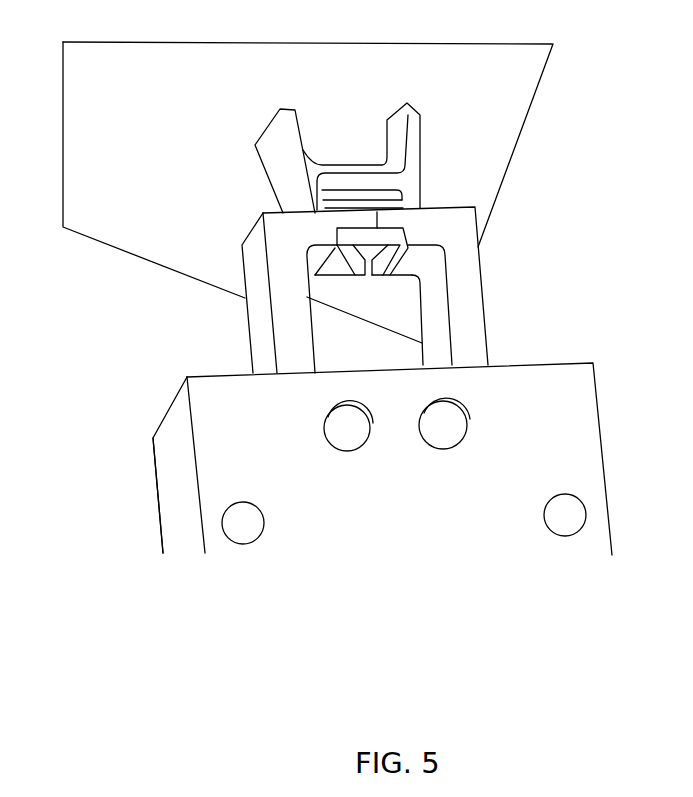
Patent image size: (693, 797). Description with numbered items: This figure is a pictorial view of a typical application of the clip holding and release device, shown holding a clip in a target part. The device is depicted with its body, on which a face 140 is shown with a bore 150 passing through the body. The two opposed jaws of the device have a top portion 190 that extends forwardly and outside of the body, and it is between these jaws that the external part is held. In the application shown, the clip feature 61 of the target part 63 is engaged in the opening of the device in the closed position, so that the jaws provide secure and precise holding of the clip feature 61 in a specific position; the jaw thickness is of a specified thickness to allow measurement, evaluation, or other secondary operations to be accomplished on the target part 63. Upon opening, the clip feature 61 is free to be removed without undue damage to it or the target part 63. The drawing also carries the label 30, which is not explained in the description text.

The fixture assembly 30 is at (220, 467).
The clip feature 61 is at (378, 250).
The target part 63 is at (175, 232).
The face 140 is at (533, 383).
The bore 150 is at (568, 512).
The top portion 190 is at (470, 283).